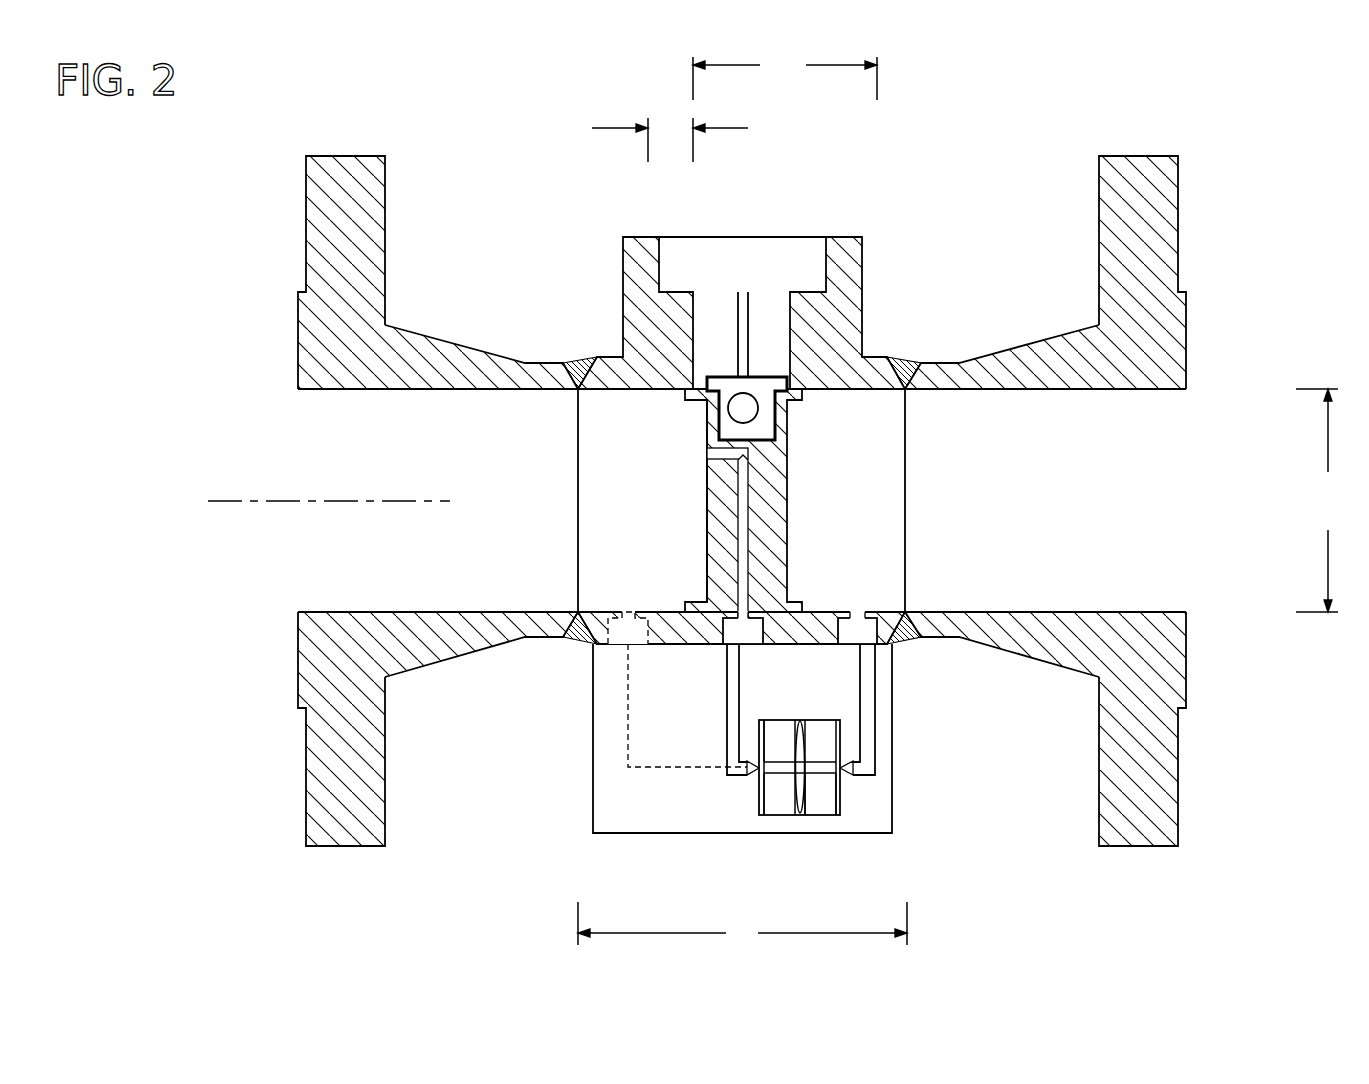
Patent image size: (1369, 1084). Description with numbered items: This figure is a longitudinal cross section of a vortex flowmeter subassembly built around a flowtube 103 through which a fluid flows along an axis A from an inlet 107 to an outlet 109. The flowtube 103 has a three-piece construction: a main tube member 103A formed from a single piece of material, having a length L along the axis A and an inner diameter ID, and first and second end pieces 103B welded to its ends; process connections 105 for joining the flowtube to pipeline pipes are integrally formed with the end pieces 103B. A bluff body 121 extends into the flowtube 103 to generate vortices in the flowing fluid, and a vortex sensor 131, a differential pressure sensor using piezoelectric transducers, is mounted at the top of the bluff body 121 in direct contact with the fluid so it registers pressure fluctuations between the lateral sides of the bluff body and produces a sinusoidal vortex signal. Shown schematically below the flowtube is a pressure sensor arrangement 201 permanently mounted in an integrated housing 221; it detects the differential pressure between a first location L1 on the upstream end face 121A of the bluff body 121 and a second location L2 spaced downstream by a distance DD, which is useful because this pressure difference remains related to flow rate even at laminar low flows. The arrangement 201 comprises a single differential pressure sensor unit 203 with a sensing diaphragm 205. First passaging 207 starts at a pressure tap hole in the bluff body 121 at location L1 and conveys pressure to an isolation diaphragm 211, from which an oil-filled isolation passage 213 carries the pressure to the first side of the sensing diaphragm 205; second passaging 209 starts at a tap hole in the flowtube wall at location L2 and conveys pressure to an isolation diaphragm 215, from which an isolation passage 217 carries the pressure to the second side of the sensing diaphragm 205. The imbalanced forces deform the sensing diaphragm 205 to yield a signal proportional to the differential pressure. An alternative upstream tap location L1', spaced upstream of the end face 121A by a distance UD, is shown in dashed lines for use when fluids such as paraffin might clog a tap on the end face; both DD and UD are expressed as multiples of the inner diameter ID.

The flowtube 103 is at (963, 320).
The main tube member 103A is at (600, 368).
The end pieces 103B is at (455, 352).
The process connections 105 is at (314, 208).
The inlet 107 is at (335, 573).
The outlet 109 is at (1170, 578).
The bluff body 121 is at (788, 483).
The upstream end face 121A is at (707, 523).
The vortex sensor 131 is at (723, 377).
The pressure sensor arrangement 201 is at (907, 803).
The differential pressure sensor unit 203 is at (778, 815).
The sensing diaphragm 205 is at (802, 742).
The first passaging 207 is at (733, 683).
The second passaging 209 is at (867, 702).
The isolation diaphragm 211 is at (755, 807).
The isolation passage 213 is at (780, 770).
The isolation diaphragm 215 is at (842, 793).
The isolation passage 217 is at (812, 770).
The integrated housing 221 is at (593, 737).
The axis A is at (224, 499).
The first location L1 is at (696, 530).
The alternative upstream pressure tap location L1' is at (671, 658).
The second location L2 is at (855, 612).
The inner diameter ID is at (1319, 500).
The distance DD is at (785, 75).
The distance UD is at (645, 137).
The length L is at (742, 925).